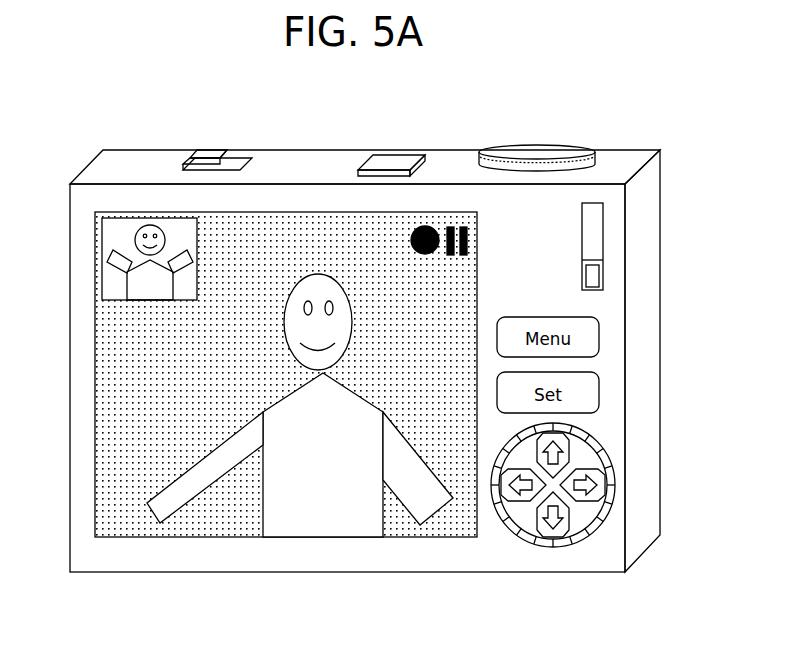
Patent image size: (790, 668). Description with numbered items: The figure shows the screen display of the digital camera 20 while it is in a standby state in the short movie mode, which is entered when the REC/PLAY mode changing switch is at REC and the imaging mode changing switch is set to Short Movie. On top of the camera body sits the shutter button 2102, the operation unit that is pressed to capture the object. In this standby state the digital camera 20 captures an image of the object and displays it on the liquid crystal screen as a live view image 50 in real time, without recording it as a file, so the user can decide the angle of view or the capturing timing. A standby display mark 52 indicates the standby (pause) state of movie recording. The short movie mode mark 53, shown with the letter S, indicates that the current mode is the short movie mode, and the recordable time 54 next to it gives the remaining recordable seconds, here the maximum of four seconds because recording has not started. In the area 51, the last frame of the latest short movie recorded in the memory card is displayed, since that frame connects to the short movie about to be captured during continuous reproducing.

The digital camera 20 is at (118, 152).
The shutter button 2102 is at (550, 128).
The live view image 50 is at (105, 392).
The area 51 is at (102, 251).
The standby display mark 52 is at (430, 222).
The short movie mode mark 53 is at (478, 292).
The recordable time 54 is at (440, 315).